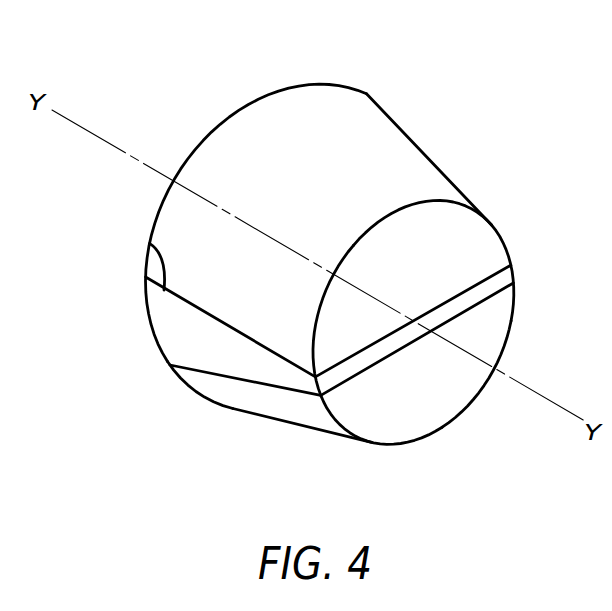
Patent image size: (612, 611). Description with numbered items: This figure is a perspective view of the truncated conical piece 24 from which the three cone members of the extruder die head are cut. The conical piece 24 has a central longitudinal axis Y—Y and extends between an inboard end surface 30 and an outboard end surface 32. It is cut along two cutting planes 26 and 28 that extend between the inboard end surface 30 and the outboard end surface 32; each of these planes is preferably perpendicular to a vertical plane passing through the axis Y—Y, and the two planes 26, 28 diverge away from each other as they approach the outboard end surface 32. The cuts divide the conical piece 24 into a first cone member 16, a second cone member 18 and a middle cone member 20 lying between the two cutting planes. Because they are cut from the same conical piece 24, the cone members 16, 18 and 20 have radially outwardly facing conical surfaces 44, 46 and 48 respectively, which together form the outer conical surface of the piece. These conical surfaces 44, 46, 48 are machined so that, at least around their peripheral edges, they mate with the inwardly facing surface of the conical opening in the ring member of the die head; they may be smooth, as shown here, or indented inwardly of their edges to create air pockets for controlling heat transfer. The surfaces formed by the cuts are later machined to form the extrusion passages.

The truncated conical piece 24 is at (262, 62).
The outboard end surface 32 is at (197, 142).
The conical surface 44 is at (395, 163).
The first cone member 16 is at (468, 243).
The middle cone member 20 is at (500, 282).
The inboard end surface 30 is at (502, 337).
The second cone member 18 is at (447, 412).
The conical surface 46 is at (257, 400).
The conical surface 48 is at (222, 358).
The cutting plane 28 is at (190, 370).
The cutting plane 26 is at (149, 243).